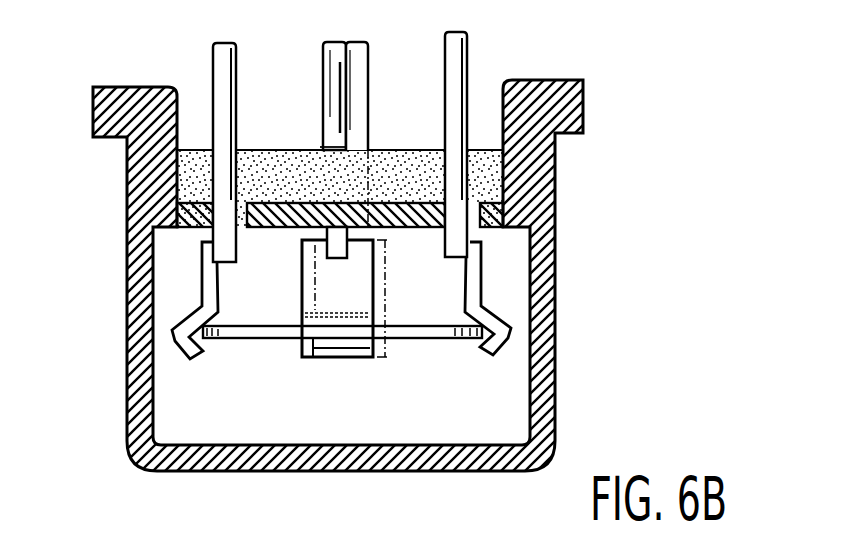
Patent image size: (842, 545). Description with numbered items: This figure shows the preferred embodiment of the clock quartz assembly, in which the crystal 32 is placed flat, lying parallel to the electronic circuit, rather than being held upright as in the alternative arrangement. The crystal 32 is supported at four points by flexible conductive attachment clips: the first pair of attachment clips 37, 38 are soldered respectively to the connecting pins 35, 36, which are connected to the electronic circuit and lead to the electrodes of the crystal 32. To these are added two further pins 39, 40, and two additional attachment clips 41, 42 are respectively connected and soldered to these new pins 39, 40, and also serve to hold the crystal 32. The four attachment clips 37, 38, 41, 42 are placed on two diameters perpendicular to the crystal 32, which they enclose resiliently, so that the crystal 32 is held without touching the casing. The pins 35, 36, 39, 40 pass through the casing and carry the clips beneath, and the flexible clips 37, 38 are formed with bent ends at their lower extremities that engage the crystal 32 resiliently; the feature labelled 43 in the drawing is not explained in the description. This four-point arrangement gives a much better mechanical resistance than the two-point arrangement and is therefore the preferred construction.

The crystal 32 is at (223, 347).
The connecting pin 35 is at (465, 62).
The connecting pin 36 is at (215, 70).
The attachment clip 37 is at (480, 265).
The attachment clip 38 is at (207, 284).
The pin 39 is at (326, 65).
The pin 40 is at (362, 65).
The attachment clip 41 is at (312, 298).
The attachment clip 42 is at (362, 302).
The hook tab 43 is at (195, 355).